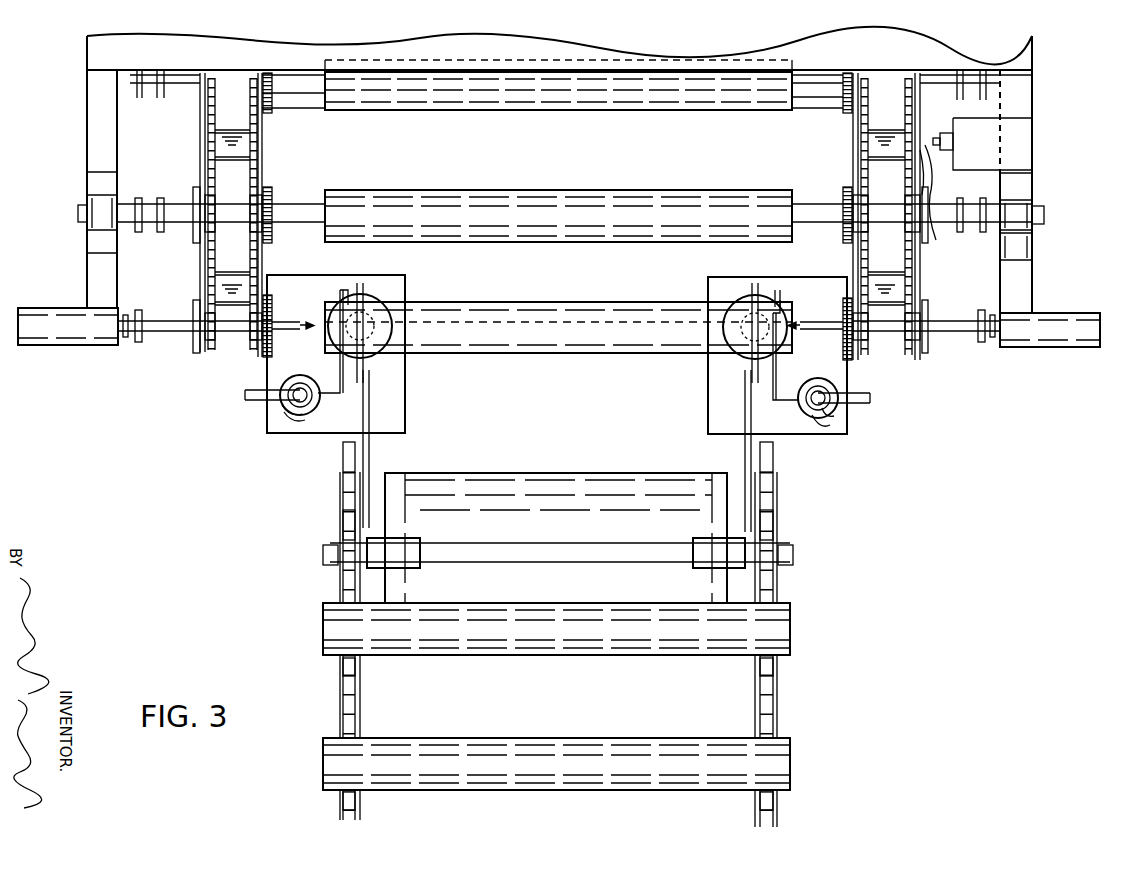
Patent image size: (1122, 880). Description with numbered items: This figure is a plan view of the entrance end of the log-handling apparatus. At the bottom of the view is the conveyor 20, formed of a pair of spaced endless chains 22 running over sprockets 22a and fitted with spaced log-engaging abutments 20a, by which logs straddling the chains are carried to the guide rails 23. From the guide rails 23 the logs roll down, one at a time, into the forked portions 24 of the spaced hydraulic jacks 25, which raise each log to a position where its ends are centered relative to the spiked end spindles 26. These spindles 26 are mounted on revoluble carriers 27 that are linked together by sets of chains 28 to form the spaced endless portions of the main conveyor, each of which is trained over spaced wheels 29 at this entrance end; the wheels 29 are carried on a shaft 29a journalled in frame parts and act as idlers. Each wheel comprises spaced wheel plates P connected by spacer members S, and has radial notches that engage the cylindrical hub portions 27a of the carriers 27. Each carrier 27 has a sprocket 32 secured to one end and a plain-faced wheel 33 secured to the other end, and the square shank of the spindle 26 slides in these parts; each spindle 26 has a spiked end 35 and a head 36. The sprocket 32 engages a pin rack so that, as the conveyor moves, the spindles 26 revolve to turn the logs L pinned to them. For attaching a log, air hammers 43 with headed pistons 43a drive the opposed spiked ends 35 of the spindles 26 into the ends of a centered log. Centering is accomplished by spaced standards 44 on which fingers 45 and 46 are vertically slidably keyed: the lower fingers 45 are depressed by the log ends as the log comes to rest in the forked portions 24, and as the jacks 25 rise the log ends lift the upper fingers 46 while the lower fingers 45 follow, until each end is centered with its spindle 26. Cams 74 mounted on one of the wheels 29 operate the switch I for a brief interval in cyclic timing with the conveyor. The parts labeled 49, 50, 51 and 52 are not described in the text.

The conveyor 20 is at (768, 692).
The log-engaging abutments 20a is at (345, 522).
The endless chains 22 is at (340, 585).
The sprockets 22a is at (350, 495).
The guide rails 23 is at (372, 416).
The forked portions 24 is at (362, 286).
The hydraulic jacks 25 is at (378, 322).
The spiked end spindles 26 is at (186, 80).
The revoluble carriers 27 is at (237, 356).
The cylindrical hub portions 27a is at (233, 80).
The sets of chains 28 is at (250, 163).
The wheels 29 is at (210, 130).
The shaft 29a is at (78, 213).
The sprocket 32 is at (273, 193).
The plain-faced wheel 33 is at (196, 190).
The spiked end 35 is at (303, 322).
The head 36 is at (160, 100).
The air hammers 43 is at (40, 325).
The headed pistons 43a is at (125, 338).
The standards 44 is at (300, 390).
The fingers 45 is at (338, 290).
The fingers 46 is at (346, 395).
The pawl 49 is at (835, 416).
The handle 50 is at (840, 410).
The pawl 51 is at (287, 411).
The handle 52 is at (276, 405).
The cams 74 is at (934, 247).
The switch I is at (946, 140).
The log L is at (483, 207).
The wheel plates P is at (205, 264).
The spacer members S is at (233, 137).